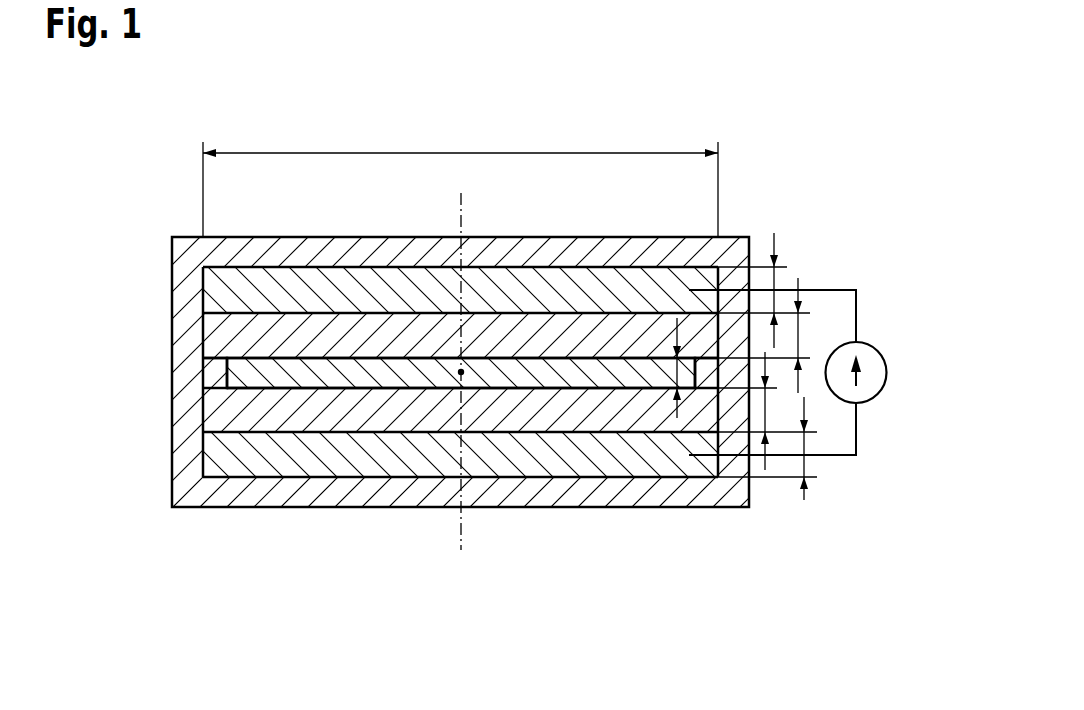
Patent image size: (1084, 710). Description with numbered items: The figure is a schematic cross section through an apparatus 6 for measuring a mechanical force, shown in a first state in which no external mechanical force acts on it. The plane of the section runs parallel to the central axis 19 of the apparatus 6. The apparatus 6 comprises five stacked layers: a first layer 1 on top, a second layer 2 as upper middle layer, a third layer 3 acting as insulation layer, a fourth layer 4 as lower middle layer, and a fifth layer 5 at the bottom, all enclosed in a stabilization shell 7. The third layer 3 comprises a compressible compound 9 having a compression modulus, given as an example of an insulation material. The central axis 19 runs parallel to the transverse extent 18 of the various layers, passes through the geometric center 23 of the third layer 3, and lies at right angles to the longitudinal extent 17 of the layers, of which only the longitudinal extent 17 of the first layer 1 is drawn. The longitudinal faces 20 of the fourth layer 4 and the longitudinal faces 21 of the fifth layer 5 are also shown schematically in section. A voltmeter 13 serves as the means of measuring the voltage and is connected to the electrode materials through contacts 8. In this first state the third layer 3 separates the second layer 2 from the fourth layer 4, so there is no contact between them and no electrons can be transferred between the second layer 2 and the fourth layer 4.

The first layer 1 is at (222, 285).
The second layer 2 is at (222, 338).
The third layer 3 is at (242, 372).
The fourth layer 4 is at (222, 418).
The fifth layer 5 is at (222, 463).
The apparatus 6 is at (507, 352).
The stabilization shell 7 is at (597, 253).
The contacts 8 is at (858, 306).
The compressible compound 9 is at (402, 372).
The voltmeter 13 is at (887, 372).
The longitudinal extent 17 is at (473, 153).
The transverse extent 18 is at (805, 463).
The central axis 19 is at (462, 228).
The longitudinal faces of the fourth layer 20 is at (343, 370).
The longitudinal faces of the fifth layer 21 is at (643, 421).
The geometric center 23 is at (461, 372).